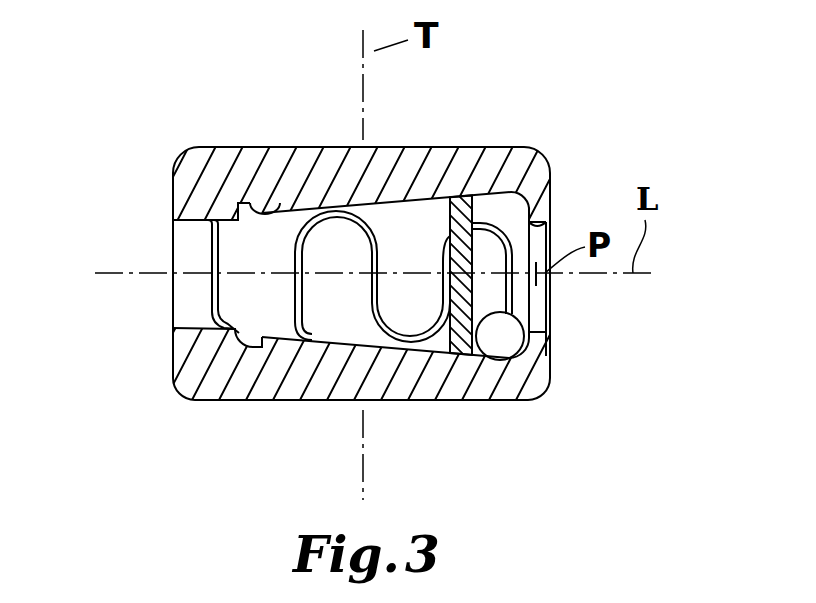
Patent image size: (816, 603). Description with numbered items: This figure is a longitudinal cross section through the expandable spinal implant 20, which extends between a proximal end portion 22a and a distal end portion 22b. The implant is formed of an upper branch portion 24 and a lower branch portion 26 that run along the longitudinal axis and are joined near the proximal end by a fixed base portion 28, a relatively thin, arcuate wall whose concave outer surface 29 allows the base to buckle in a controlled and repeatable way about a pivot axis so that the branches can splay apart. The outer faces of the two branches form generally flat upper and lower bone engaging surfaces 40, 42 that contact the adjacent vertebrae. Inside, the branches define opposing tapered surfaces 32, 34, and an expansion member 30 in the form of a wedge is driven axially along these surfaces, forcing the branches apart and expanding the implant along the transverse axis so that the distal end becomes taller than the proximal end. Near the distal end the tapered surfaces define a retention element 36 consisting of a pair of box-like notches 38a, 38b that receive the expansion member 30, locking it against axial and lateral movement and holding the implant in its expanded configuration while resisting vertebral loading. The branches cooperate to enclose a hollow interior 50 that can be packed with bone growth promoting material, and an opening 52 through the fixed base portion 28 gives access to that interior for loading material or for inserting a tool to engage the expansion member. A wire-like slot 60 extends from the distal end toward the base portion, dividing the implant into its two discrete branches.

The spinal implant 20 is at (204, 76).
The proximal end portion 22a is at (575, 356).
The distal end portion 22b is at (150, 207).
The upper branch portion 24 is at (452, 133).
The lower branch portion 26 is at (235, 440).
The fixed base portion 28 is at (554, 199).
The concave outer surface 29 is at (552, 340).
The expansion member 30 is at (485, 232).
The tapered surface 32 is at (349, 204).
The tapered surface 34 is at (377, 348).
The retention element 36 is at (195, 135).
The notch 38a is at (268, 213).
The notch 38b is at (222, 348).
The upper bone engaging surface 40 is at (390, 148).
The lower bone engaging surface 42 is at (492, 402).
The hollow interior 50 is at (322, 309).
The opening 52 is at (548, 210).
The slot 60 is at (192, 293).